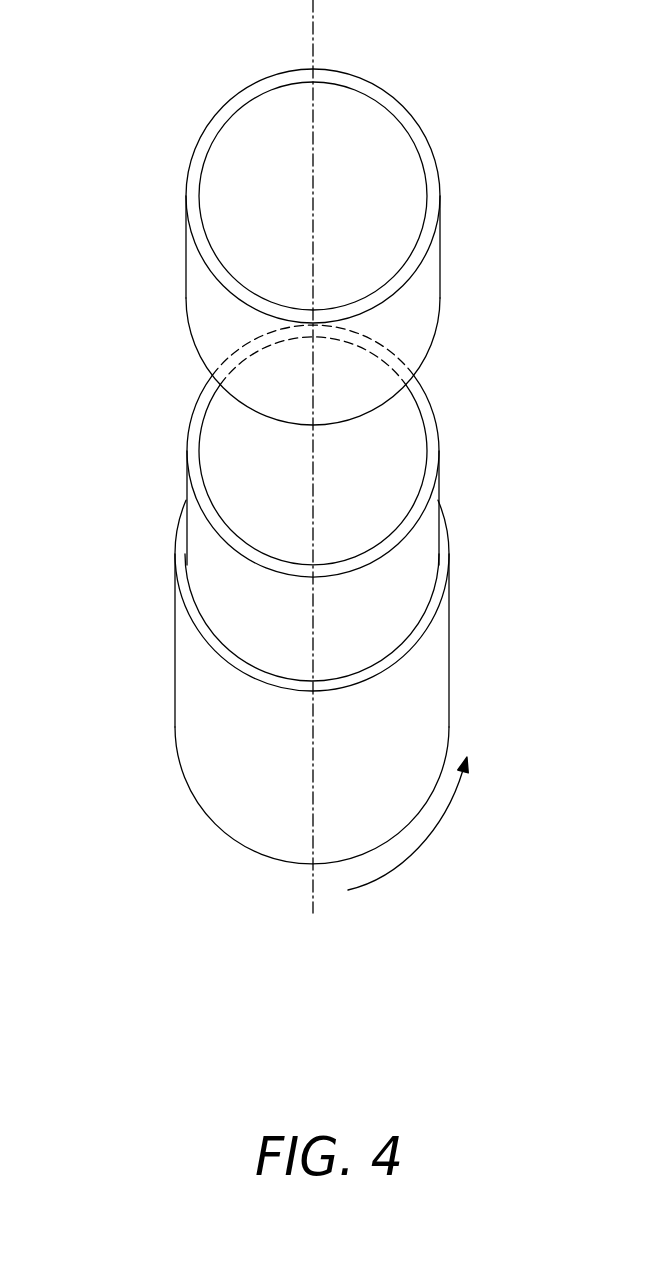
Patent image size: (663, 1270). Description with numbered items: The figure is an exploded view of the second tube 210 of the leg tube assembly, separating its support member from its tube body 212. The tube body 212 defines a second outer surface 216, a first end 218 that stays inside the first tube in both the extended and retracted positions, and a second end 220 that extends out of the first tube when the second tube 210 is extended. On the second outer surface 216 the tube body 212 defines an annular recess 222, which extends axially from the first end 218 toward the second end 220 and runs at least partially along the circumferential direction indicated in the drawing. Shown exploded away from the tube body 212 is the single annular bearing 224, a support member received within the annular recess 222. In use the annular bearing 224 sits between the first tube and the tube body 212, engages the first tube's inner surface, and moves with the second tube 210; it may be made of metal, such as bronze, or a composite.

The second tube 210 is at (452, 64).
The tube body 212 is at (144, 655).
The second outer surface 216 is at (442, 674).
The first end 218 is at (190, 865).
The second end 220 is at (156, 421).
The annular recess 222 is at (440, 550).
The annular bearing 224 is at (228, 157).